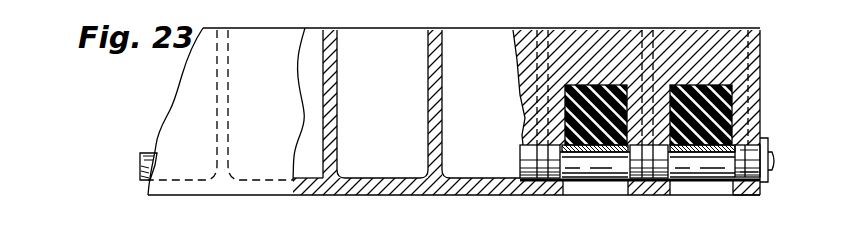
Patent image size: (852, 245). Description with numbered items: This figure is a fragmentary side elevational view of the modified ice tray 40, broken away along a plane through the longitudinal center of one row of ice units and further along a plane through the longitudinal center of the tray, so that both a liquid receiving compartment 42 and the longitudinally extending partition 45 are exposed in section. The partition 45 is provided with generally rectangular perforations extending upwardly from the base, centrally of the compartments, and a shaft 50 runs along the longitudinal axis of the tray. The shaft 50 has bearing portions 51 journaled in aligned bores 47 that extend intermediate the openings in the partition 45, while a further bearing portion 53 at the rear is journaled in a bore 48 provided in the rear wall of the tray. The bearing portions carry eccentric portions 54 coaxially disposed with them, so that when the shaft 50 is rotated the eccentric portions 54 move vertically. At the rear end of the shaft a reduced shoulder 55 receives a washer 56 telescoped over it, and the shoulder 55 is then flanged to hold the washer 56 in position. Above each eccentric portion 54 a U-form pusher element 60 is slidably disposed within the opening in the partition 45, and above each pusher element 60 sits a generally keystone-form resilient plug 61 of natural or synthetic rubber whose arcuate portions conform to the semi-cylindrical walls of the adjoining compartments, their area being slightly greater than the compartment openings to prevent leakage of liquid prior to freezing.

The tray 40 is at (178, 95).
The liquid receiving compartment 42 is at (406, 104).
The longitudinally extending partition 45 is at (738, 45).
The aligned bores 47 is at (537, 195).
The bore 48 is at (747, 195).
The shaft 50 is at (148, 153).
The bearing portions 51 is at (528, 155).
The bearing portion 53 is at (755, 158).
The eccentric portions 54 is at (605, 165).
The reduced shoulder 55 is at (770, 157).
The washer 56 is at (762, 143).
The U-form pusher element 60 is at (585, 163).
The resilient plug 61 is at (565, 102).